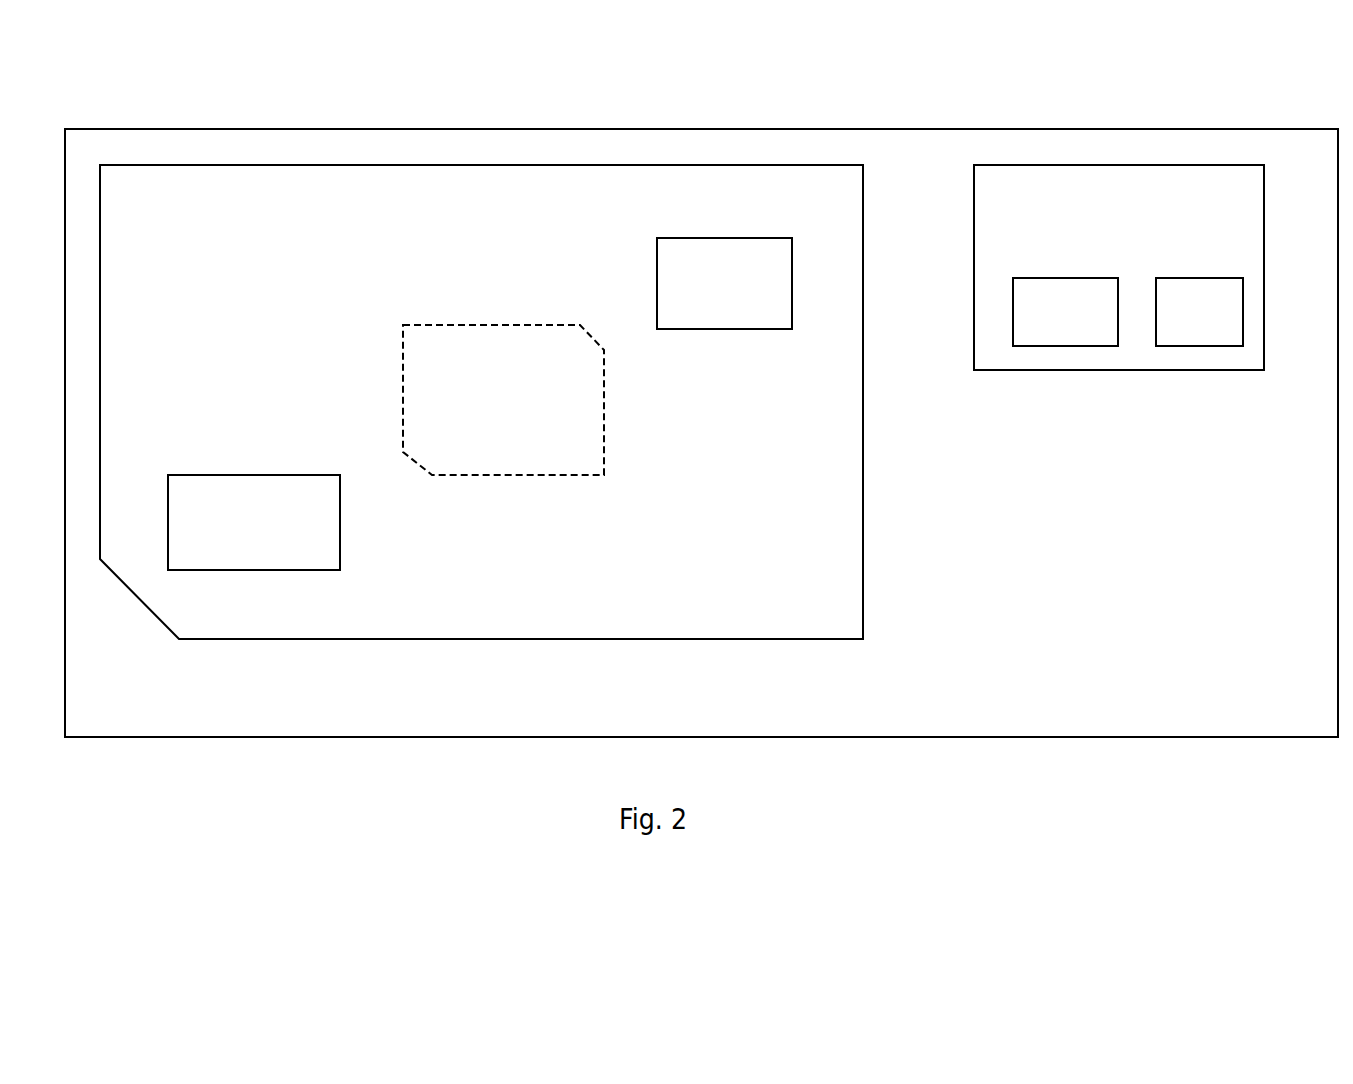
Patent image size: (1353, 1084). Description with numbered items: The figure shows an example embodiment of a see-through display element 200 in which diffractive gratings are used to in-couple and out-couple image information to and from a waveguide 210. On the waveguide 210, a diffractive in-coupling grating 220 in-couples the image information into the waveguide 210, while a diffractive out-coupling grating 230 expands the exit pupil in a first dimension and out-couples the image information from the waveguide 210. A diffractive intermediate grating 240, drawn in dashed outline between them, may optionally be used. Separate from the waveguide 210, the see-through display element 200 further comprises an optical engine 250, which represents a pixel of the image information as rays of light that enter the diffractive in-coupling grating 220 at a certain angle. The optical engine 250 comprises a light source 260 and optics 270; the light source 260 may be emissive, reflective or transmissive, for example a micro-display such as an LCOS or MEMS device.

The see-through display element 200 is at (771, 110).
The waveguide 210 is at (864, 611).
The diffractive in-coupling grating 220 is at (724, 283).
The diffractive out-coupling grating 230 is at (254, 522).
The diffractive intermediate grating 240 is at (503, 400).
The optical engine 250 is at (1119, 267).
The light source 260 is at (1065, 312).
The optics 270 is at (1199, 312).